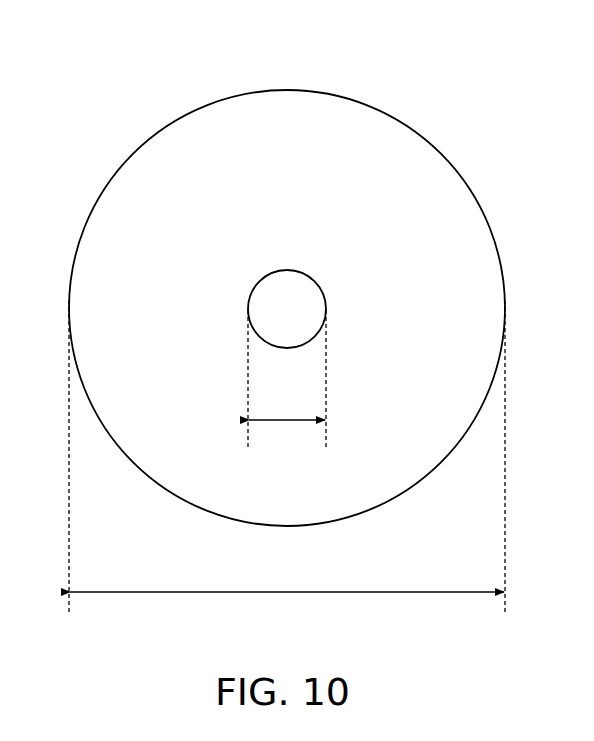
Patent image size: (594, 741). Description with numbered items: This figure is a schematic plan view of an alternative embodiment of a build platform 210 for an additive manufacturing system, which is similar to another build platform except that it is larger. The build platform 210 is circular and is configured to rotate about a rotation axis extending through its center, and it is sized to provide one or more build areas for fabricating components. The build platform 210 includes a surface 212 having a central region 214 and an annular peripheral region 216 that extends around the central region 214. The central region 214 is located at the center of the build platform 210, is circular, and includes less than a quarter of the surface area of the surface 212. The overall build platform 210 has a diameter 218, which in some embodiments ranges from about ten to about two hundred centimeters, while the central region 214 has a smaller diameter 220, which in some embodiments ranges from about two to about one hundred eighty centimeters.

The build platform 210 is at (457, 78).
The surface 212 is at (127, 207).
The central region 214 is at (327, 310).
The annular peripheral region 216 is at (480, 368).
The diameter 218 is at (398, 593).
The diameter 220 is at (298, 421).